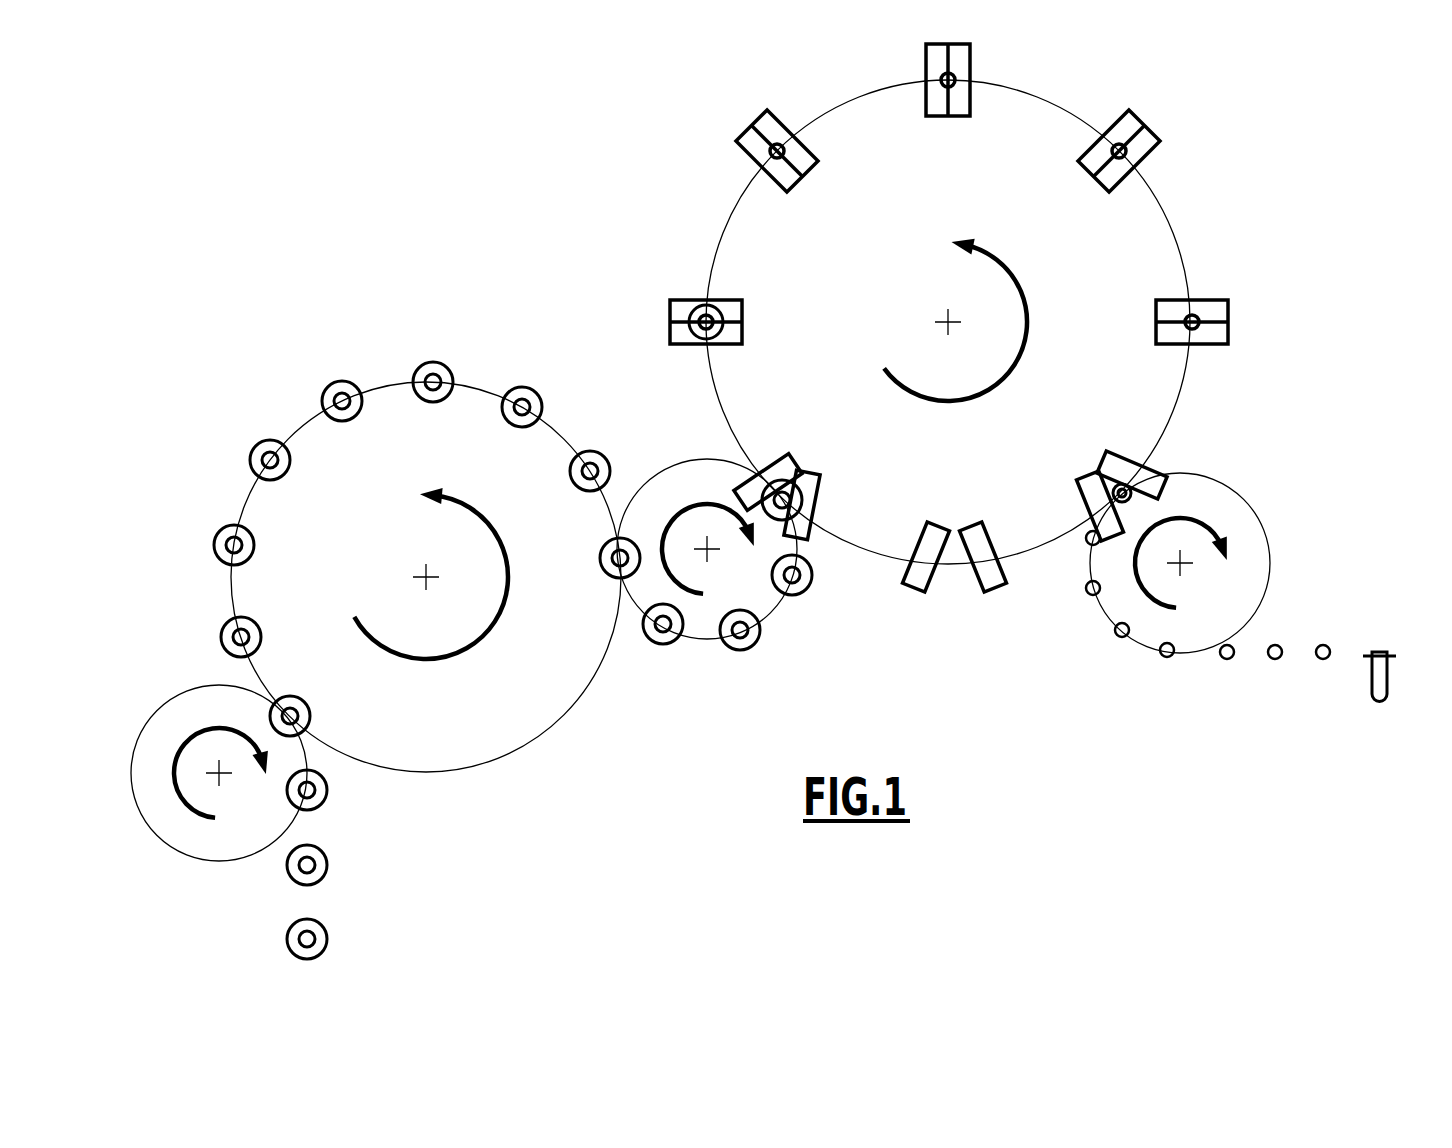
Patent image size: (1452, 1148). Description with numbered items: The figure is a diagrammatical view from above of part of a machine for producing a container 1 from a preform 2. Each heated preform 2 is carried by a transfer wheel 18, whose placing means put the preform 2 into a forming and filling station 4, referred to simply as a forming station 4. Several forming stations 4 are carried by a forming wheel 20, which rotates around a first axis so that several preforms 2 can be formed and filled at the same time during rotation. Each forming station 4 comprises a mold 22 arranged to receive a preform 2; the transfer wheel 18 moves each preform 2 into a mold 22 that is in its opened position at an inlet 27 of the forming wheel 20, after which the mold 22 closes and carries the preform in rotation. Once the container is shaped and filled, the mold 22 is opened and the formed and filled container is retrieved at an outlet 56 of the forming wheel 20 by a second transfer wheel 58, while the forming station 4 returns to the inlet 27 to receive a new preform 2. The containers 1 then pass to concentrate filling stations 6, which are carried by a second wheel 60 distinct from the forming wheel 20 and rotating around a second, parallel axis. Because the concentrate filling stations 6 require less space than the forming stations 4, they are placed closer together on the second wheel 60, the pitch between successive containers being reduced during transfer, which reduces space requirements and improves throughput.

The container 1 is at (665, 630).
The preform 2 is at (1276, 660).
The forming and filling station 4 is at (778, 136).
The concentrate filling station 6 is at (428, 378).
The transfer wheel 18 is at (1250, 538).
The forming wheel 20 is at (1033, 132).
The mold 22 is at (1208, 298).
The inlet 27 is at (1090, 490).
The outlet 56 is at (808, 499).
The second transfer wheel 58 is at (683, 490).
The second wheel 60 is at (465, 737).